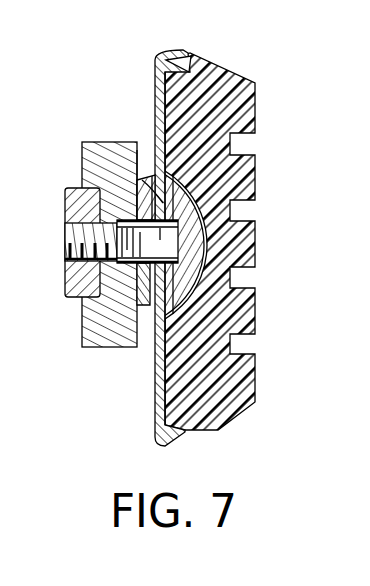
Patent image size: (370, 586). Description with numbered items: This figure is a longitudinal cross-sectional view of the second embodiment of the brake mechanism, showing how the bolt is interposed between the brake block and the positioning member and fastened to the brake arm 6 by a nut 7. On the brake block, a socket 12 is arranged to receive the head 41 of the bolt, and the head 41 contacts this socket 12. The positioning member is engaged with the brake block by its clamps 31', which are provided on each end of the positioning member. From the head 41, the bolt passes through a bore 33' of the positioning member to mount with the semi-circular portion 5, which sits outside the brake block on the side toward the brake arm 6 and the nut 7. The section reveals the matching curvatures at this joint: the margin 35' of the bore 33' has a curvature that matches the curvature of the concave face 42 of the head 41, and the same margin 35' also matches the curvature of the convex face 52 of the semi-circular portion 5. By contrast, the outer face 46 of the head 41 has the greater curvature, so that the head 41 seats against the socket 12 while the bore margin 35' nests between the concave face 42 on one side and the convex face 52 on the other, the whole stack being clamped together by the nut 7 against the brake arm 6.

The clamp 31' is at (163, 225).
The bore 33' is at (112, 141).
The brake arm 6 is at (97, 142).
The semi-circular portion 5 is at (145, 186).
The convex face 52 is at (151, 186).
The nut 7 is at (68, 197).
The socket 12 is at (188, 182).
The concave face 42 is at (180, 233).
The head 41 is at (200, 245).
The outer face 46 is at (163, 245).
The margin 35' is at (128, 330).